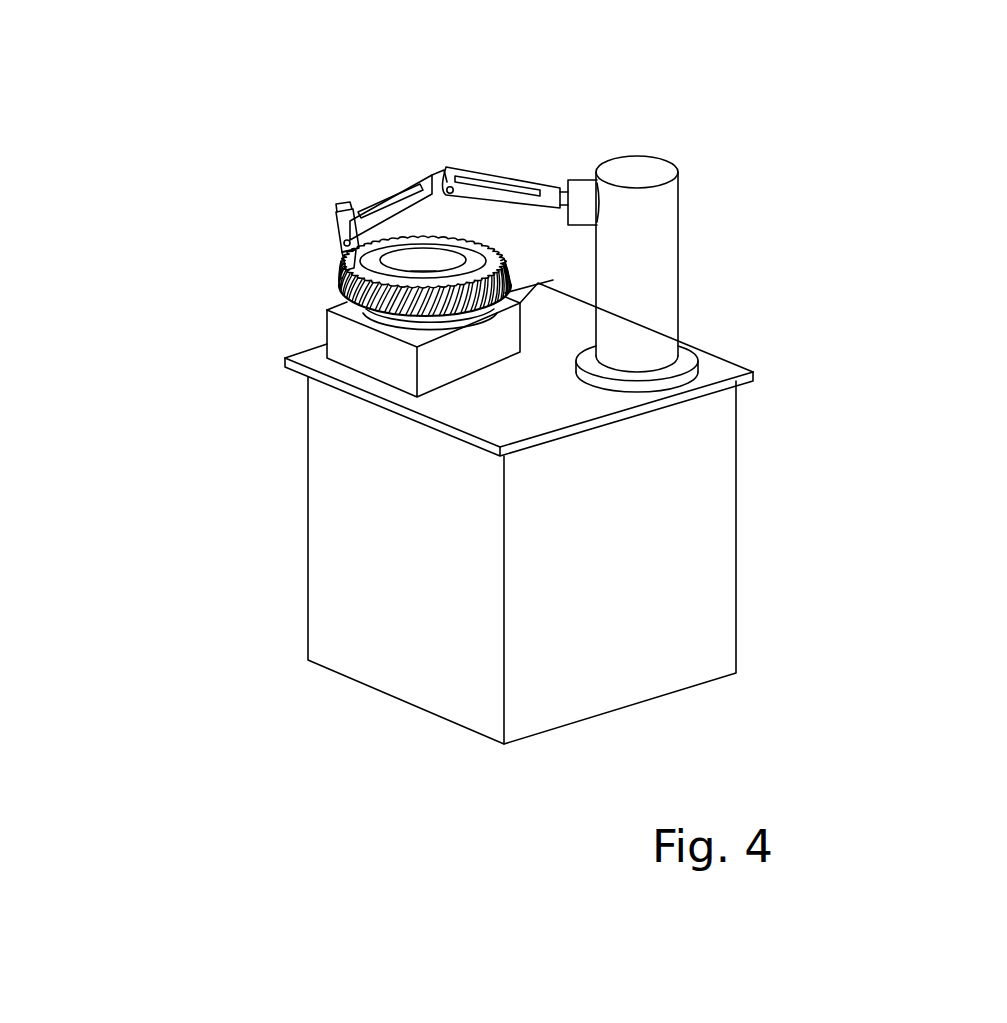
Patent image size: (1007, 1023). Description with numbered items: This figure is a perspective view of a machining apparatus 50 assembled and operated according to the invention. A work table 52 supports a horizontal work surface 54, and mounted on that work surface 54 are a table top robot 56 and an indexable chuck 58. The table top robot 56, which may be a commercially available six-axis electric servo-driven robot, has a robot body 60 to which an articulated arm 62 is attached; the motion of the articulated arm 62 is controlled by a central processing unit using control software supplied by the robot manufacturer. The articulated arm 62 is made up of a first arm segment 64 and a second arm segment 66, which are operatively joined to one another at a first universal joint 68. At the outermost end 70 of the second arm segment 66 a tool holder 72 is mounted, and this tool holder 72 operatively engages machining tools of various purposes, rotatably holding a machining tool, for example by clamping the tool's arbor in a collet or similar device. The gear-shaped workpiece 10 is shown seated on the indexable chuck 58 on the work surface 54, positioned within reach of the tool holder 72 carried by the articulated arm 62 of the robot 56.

The bevel gear 10 is at (348, 290).
The machining apparatus 50 is at (428, 105).
The work table 52 is at (860, 542).
The horizontal work surface 54 is at (717, 370).
The table top robot 56 is at (678, 143).
The indexable chuck 58 is at (373, 353).
The robot body 60 is at (643, 243).
The articulated arm 62 is at (513, 170).
The first arm segment 64 is at (553, 190).
The second arm segment 66 is at (397, 188).
The first universal joint 68 is at (455, 172).
The outermost end 70 is at (342, 233).
The tool holder 72 is at (347, 208).